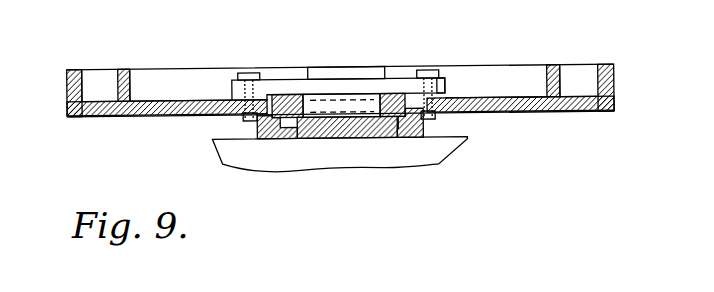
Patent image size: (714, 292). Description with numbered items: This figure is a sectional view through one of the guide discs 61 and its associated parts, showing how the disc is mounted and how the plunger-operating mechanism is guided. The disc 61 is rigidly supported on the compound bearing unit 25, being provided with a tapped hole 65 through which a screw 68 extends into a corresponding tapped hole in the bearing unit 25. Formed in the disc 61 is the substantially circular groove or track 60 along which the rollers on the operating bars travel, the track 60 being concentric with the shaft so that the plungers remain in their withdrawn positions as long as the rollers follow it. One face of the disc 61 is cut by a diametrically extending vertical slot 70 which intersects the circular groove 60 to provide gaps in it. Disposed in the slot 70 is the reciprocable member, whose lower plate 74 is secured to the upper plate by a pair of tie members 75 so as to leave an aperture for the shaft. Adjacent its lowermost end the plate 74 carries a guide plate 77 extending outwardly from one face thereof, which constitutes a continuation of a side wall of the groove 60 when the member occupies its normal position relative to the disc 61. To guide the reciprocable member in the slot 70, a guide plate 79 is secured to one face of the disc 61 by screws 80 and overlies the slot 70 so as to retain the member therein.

The circular groove or track 60 is at (82, 67).
The guide disc 61 is at (484, 113).
The lower plate 74 is at (325, 94).
The guide plate 77 is at (372, 77).
The guide plate 79 is at (444, 83).
The screws 80 is at (248, 72).
The diametrically extending vertical slot 70 is at (295, 94).
The tie members 75 is at (312, 117).
The tapped hole 65 is at (360, 136).
The screws 68 is at (288, 138).
The compound bearing unit 25 is at (442, 160).